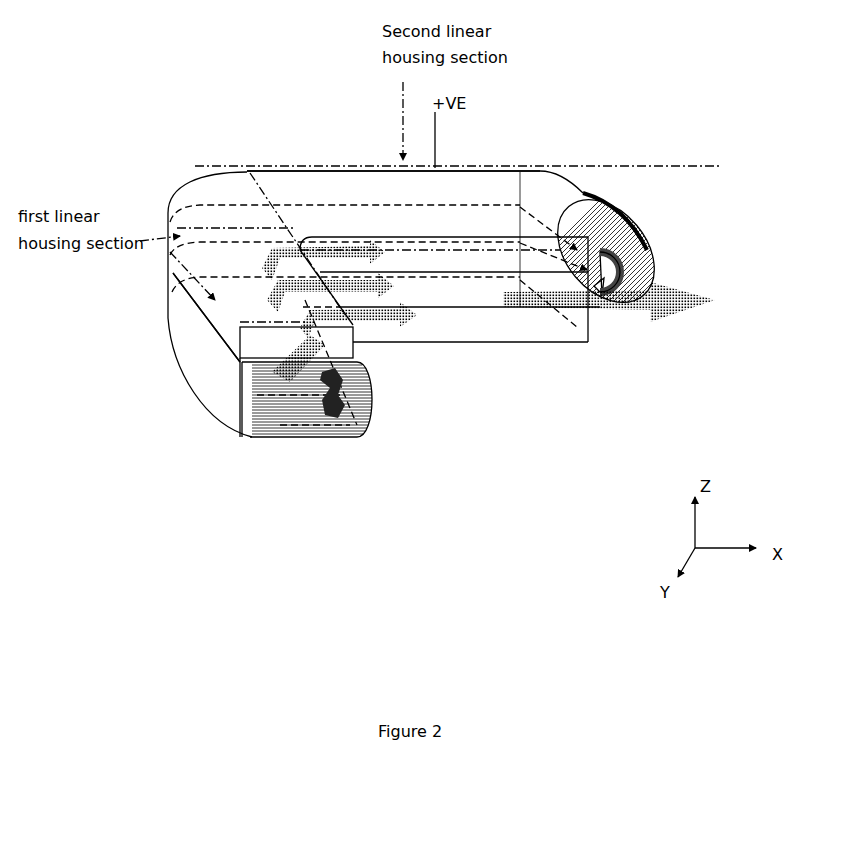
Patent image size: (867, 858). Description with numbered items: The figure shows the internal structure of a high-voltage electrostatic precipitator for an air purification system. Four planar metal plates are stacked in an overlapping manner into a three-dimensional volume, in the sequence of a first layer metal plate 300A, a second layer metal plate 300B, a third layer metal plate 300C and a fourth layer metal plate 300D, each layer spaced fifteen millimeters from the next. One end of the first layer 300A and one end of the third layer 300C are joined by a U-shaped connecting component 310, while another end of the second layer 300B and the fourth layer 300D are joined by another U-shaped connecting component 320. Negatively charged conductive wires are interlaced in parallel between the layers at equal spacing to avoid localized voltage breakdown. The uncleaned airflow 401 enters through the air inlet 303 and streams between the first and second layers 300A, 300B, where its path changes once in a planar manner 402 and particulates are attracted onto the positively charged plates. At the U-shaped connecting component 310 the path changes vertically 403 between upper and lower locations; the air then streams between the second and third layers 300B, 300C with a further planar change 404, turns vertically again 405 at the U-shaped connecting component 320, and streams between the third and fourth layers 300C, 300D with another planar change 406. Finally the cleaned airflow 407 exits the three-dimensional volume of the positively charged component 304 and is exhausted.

The first layer metal plate 300A is at (469, 109).
The second layer metal plate 300B is at (418, 165).
The third layer metal plate 300C is at (450, 286).
The fourth layer metal plate 300D is at (355, 338).
The air inlet 303 is at (301, 309).
The positively charged component 304 is at (598, 356).
The U-shaped connecting component 310 is at (714, 244).
The U-shaped connecting component 320 is at (338, 440).
The uncleaned airflow 401 is at (136, 335).
The planar airflow direction change 402 is at (228, 200).
The vertical airflow direction change 403 is at (634, 234).
The planar airflow direction change 404 is at (203, 237).
The vertical airflow direction change 405 is at (412, 409).
The planar airflow direction change 406 is at (327, 216).
The cleaned airflow 407 is at (671, 322).